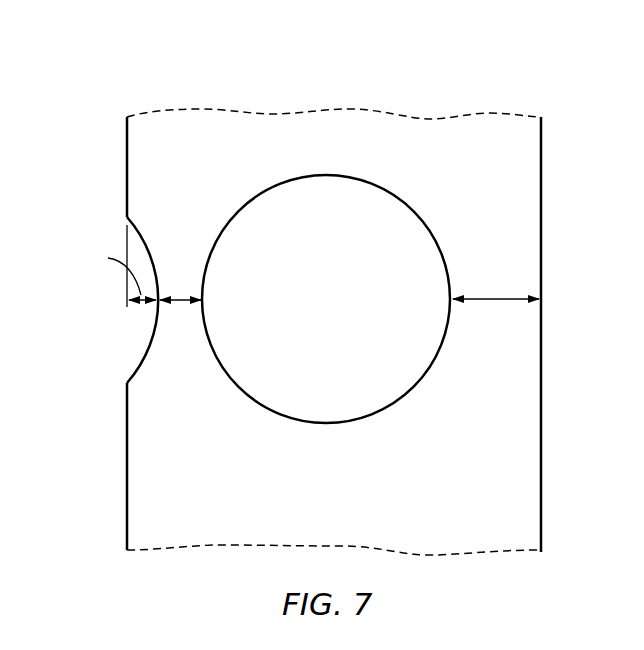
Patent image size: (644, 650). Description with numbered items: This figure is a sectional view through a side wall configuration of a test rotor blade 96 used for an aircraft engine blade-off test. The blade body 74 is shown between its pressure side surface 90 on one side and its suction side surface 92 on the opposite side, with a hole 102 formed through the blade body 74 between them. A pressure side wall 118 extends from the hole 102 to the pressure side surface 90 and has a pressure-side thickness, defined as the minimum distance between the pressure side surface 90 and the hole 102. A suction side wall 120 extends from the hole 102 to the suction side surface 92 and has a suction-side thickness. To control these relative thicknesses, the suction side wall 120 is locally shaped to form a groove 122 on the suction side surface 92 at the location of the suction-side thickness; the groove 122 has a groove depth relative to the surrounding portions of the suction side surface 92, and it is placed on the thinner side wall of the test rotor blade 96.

The blade body 74 is at (460, 148).
The pressure side surface 90 is at (541, 175).
The suction side surface 92 is at (127, 172).
The test rotor blade 96 is at (537, 73).
The hole 102 is at (339, 309).
The pressure side wall 118 is at (515, 318).
The suction side wall 120 is at (168, 225).
The groove 122 is at (137, 326).